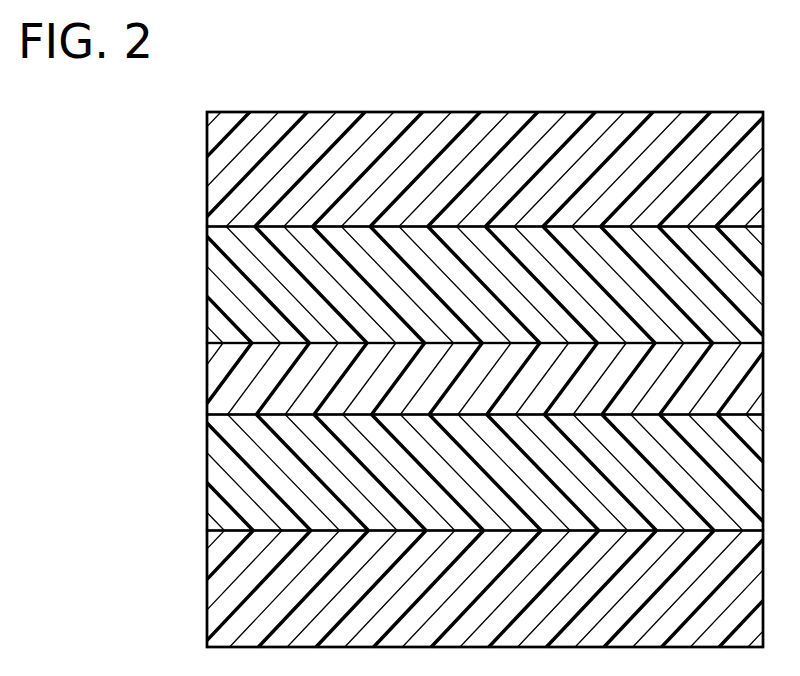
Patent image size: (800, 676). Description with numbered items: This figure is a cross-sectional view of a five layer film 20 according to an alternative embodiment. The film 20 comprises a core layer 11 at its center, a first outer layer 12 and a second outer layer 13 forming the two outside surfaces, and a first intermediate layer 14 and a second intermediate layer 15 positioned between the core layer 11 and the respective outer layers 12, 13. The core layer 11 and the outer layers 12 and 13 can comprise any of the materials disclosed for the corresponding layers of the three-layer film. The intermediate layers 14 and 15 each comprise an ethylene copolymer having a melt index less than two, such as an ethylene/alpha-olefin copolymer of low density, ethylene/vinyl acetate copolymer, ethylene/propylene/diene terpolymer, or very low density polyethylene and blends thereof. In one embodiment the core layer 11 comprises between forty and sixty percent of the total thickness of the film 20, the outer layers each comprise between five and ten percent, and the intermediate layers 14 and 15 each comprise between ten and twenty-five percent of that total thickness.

The film 20 is at (483, 73).
The first outer layer 12 is at (214, 167).
The first intermediate layer 14 is at (214, 283).
The core layer 11 is at (214, 369).
The second intermediate layer 15 is at (214, 467).
The second outer layer 13 is at (214, 589).